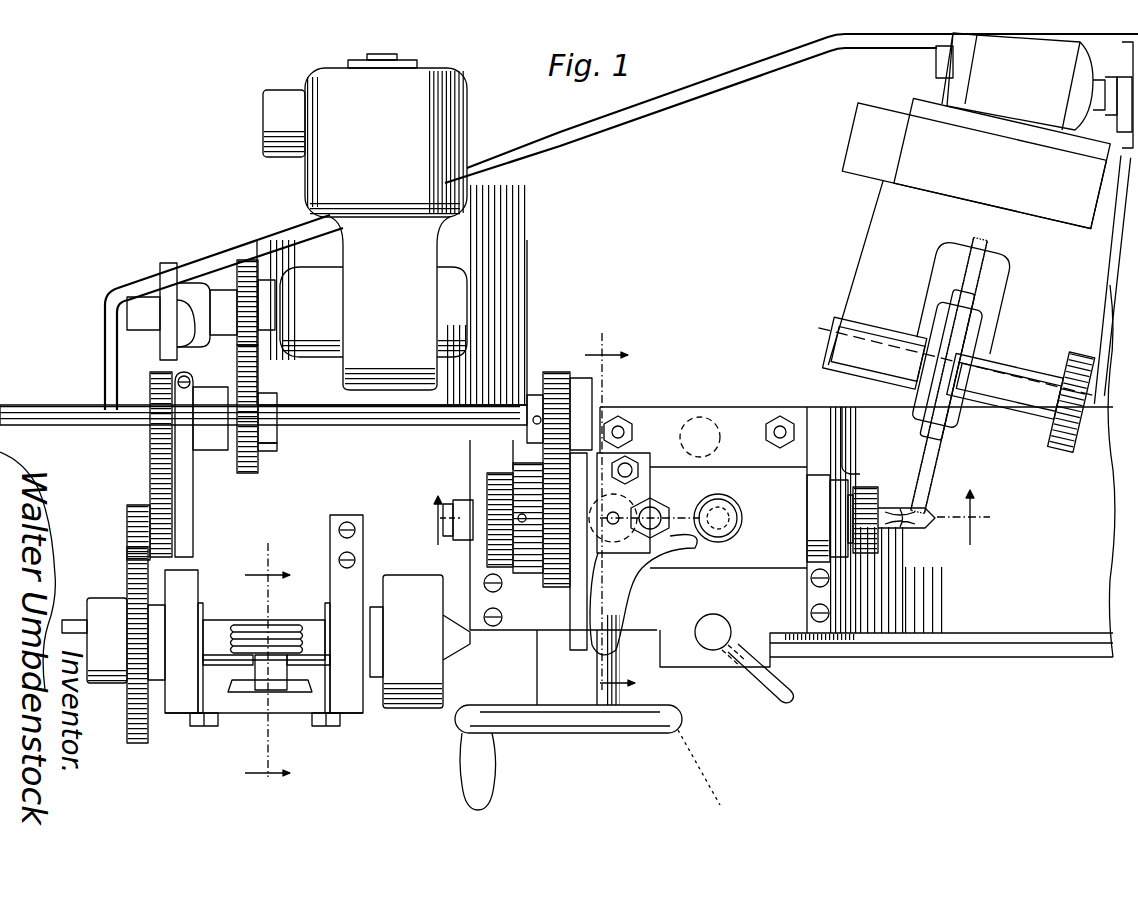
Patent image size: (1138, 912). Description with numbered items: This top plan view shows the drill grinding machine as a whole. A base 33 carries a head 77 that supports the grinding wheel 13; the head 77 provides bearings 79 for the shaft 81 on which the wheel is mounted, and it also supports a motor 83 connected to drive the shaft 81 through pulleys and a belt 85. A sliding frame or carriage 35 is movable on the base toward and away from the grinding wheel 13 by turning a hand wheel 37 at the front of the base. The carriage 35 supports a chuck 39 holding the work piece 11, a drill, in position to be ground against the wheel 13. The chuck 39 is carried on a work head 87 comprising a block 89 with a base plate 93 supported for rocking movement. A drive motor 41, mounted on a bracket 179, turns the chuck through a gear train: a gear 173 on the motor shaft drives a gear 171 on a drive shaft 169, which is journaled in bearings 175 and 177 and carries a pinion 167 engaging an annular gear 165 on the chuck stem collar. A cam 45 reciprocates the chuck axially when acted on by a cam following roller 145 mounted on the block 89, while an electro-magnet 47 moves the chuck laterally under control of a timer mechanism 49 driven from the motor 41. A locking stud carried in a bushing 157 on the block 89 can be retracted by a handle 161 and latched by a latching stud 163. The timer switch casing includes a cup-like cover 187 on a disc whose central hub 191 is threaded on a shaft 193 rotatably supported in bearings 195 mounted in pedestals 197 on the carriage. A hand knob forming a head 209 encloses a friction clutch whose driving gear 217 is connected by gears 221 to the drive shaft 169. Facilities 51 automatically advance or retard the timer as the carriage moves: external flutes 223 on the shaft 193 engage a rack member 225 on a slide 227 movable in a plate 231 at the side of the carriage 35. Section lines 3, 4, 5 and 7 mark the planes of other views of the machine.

The section line 3 is at (617, 631).
The section line 4 is at (267, 667).
The section line 5 is at (603, 446).
The section line 7 is at (698, 517).
The work piece 11 is at (898, 530).
The grinding wheel 13 is at (960, 378).
The base 33 is at (621, 222).
The sliding frame 35 is at (27, 565).
The hand wheel 37 is at (680, 722).
The chuck 39 is at (856, 481).
The drive motor 41 is at (365, 135).
The cam 45 is at (570, 580).
The electro-magnet 47 is at (706, 418).
The timer mechanism 49 is at (397, 710).
The timer adjusting facilities 51 is at (212, 732).
The head 77 is at (964, 260).
The bearings 79 is at (952, 392).
The shaft 81 is at (939, 344).
The motor 83 is at (1034, 90).
The belt 85 is at (999, 220).
The work head 87 is at (776, 420).
The block 89 is at (811, 518).
The base plate 93 is at (268, 472).
The cam following roller 145 is at (648, 497).
The bushing 157 is at (732, 526).
The handle 161 is at (726, 500).
The latching stud 163 is at (738, 514).
The annular gear 165 is at (535, 575).
The pinion 167 is at (552, 372).
The drive shaft 169 is at (302, 408).
The gear 171 is at (256, 475).
The gear 173 is at (247, 258).
The bearing 175 is at (373, 303).
The bearing 177 is at (195, 480).
The bracket 179 is at (440, 388).
The cup-like cover 187 is at (430, 576).
The central hub 191 is at (400, 575).
The shaft 193 is at (236, 623).
The bearings 195 is at (202, 606).
The pedestals 197 is at (196, 580).
The head 209 is at (107, 598).
The driving gear 217 is at (138, 745).
The gears 221 is at (148, 506).
The external flutes 223 is at (278, 625).
The rack member 225 is at (328, 730).
The slide 227 is at (250, 690).
The plate 231 is at (278, 672).